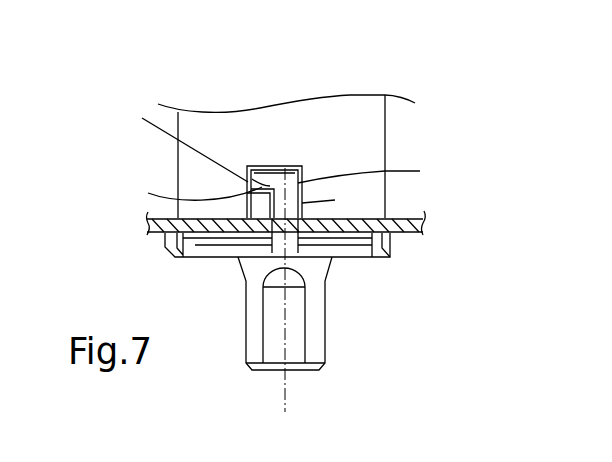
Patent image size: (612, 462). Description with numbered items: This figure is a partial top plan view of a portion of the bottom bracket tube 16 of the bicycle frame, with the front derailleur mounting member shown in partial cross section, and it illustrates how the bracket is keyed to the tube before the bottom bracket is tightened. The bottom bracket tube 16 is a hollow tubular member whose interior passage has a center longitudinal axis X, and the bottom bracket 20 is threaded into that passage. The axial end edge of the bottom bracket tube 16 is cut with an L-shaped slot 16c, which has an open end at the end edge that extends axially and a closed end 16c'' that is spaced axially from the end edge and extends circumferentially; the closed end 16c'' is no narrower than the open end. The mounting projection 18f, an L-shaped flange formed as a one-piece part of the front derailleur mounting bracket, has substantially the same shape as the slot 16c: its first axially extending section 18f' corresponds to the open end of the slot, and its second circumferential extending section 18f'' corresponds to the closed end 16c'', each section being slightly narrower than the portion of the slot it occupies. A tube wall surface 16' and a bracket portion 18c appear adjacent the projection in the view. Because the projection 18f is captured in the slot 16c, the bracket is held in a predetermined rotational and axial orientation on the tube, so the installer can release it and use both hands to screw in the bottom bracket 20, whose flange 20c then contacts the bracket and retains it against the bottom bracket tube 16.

The bottom bracket tube 16 is at (316, 156).
The contact surface of component 16' is at (352, 170).
The slot 16c is at (315, 156).
The closed end 16c'' is at (168, 139).
The mounting projection 18f is at (280, 111).
The first axially extending section 18f' is at (344, 202).
The second circumferential extending section 18f'' is at (175, 191).
The mounting plate 18c is at (424, 217).
The bottom bracket 20 is at (354, 256).
The flange 20c is at (398, 245).
The center longitudinal axis X is at (287, 350).